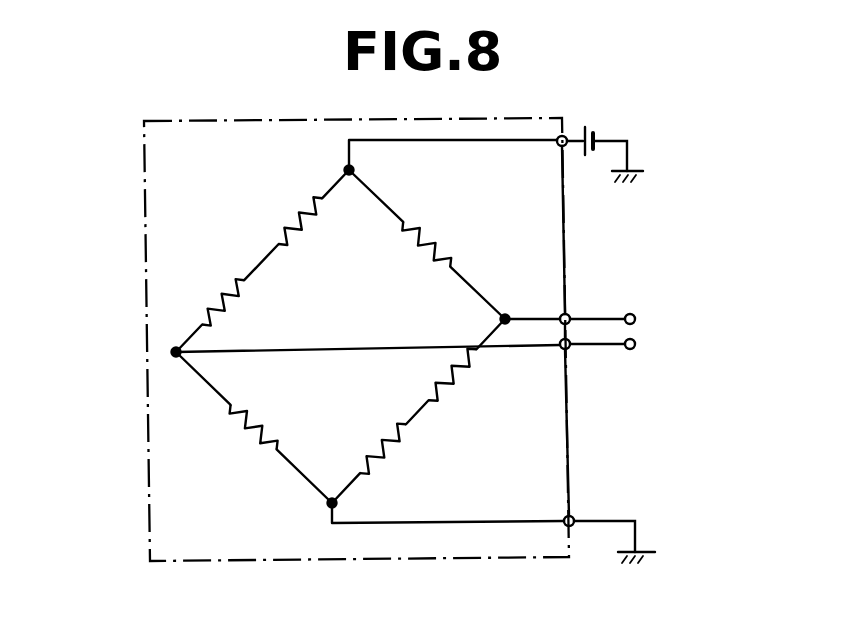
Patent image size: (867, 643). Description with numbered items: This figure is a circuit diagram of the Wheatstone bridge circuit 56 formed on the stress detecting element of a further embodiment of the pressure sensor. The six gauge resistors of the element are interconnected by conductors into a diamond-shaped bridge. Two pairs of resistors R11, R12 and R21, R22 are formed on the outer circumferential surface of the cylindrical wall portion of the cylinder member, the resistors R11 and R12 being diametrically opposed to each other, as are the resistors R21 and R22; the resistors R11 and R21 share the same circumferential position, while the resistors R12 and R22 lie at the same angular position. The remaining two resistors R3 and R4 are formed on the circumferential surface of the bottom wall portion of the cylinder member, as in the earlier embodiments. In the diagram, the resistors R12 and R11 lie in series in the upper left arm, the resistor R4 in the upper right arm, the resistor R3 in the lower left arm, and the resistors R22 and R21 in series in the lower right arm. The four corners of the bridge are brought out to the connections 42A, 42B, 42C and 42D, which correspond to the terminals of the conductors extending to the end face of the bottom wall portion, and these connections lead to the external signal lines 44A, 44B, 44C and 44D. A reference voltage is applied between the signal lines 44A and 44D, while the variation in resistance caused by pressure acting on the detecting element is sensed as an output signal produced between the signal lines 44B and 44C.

The Wheatstone bridge circuit 56 is at (148, 397).
The resistor R11 is at (302, 212).
The resistor R12 is at (222, 298).
The resistor R4 is at (438, 237).
The resistor R3 is at (242, 425).
The resistor R21 is at (458, 380).
The resistor R22 is at (402, 458).
The connection 42A is at (566, 135).
The connection 42B is at (570, 351).
The connection 42C is at (570, 315).
The connection 42D is at (574, 515).
The signal line 44A is at (571, 149).
The signal line 44B is at (614, 348).
The signal line 44C is at (612, 316).
The signal line 44D is at (625, 520).